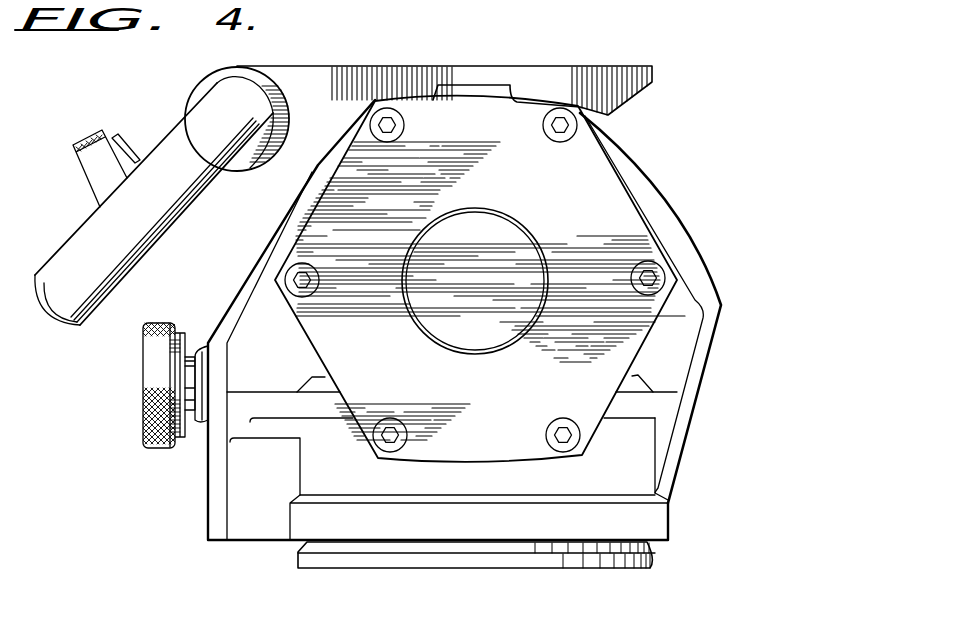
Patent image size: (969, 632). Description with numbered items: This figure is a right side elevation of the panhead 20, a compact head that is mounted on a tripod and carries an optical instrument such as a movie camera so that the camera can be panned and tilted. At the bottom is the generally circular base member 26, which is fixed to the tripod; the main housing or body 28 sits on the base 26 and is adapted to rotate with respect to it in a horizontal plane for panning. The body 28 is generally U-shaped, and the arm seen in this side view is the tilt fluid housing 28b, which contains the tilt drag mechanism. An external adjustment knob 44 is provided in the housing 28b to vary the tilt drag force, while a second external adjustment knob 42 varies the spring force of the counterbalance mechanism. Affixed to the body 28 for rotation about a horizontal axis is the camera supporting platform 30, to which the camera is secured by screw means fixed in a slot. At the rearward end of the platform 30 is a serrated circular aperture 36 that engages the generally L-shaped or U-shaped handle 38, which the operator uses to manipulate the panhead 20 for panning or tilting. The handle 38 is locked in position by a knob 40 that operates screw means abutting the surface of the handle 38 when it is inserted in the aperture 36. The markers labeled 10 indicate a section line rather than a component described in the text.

The section line 10- 10 is at (473, 50).
The panhead 20 is at (730, 118).
The base member 26 is at (518, 560).
The main housing or body 28 is at (668, 192).
The tilt fluid housing 28b is at (630, 227).
The camera supporting platform 30 is at (565, 73).
The serrated circular aperture 36 is at (255, 93).
The handle 38 is at (152, 223).
The knob 40 is at (96, 151).
The external adjustment knob 42 is at (157, 377).
The external adjustment knob 44 is at (445, 237).